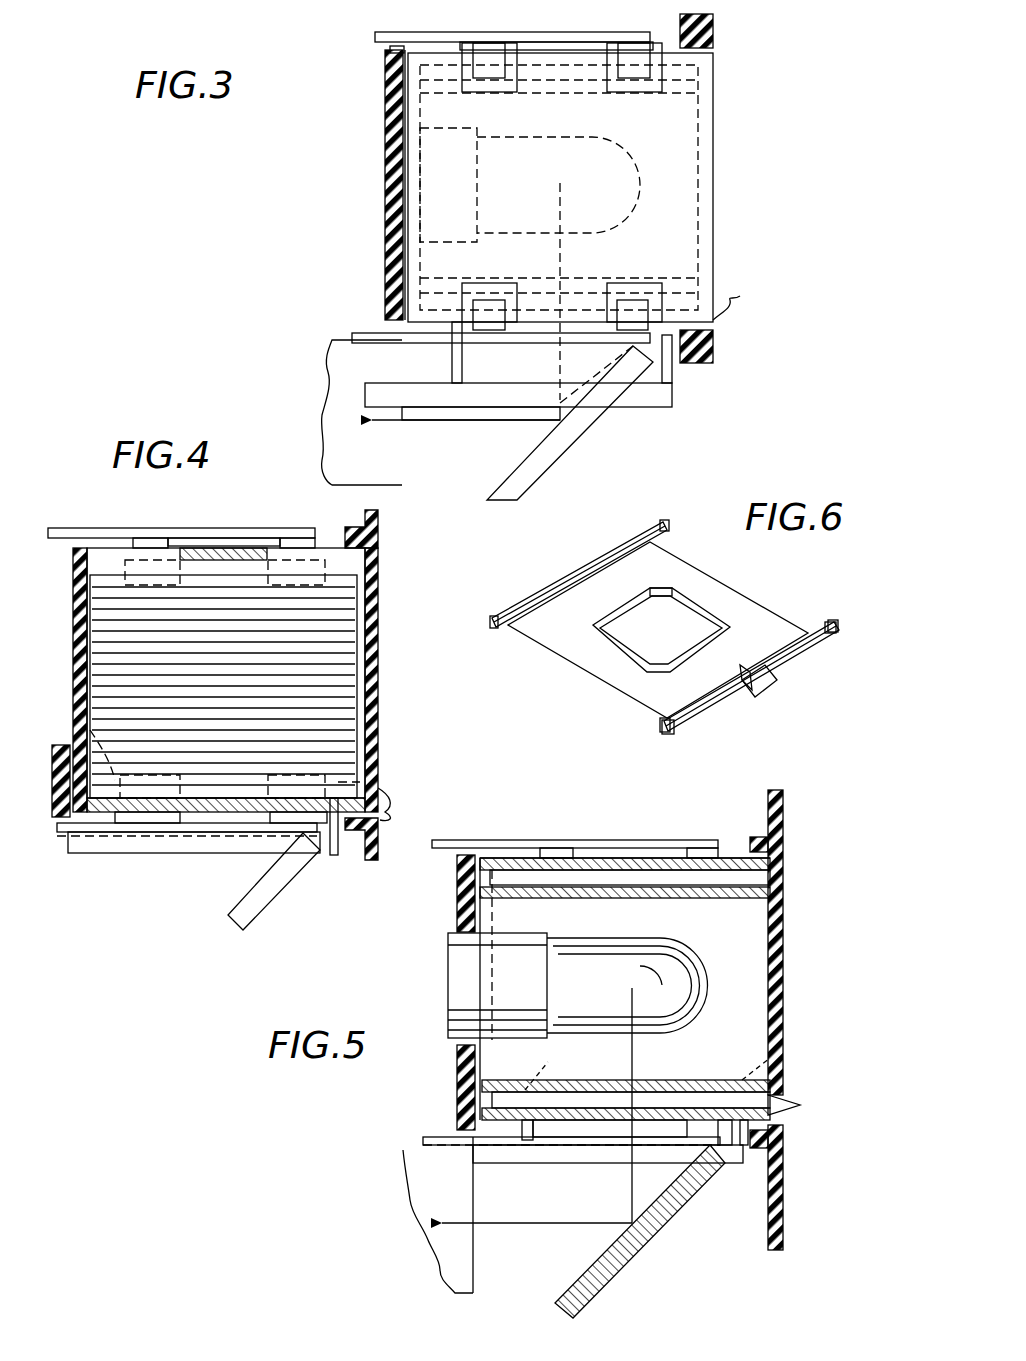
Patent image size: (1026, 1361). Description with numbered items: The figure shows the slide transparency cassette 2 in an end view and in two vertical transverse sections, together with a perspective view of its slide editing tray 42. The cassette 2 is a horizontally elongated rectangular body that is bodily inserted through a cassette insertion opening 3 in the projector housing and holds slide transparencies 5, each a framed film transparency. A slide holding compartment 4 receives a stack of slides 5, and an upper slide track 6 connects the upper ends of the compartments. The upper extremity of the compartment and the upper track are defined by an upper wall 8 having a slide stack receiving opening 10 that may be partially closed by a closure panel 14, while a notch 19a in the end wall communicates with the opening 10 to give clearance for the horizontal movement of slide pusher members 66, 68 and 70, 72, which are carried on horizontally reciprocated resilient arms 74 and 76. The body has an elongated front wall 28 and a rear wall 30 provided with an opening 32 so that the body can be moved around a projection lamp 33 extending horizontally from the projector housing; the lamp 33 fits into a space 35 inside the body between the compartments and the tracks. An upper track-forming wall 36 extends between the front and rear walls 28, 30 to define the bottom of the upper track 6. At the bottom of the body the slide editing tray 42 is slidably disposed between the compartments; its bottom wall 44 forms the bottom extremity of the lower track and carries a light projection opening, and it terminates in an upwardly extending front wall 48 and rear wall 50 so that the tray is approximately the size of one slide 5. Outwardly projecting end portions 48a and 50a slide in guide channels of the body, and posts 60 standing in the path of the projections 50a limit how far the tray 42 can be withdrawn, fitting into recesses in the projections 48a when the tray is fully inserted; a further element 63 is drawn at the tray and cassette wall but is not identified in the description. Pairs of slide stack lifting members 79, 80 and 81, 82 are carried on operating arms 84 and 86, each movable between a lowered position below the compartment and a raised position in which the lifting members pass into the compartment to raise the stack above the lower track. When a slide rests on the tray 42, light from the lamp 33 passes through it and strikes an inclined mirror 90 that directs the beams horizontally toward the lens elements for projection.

In FIG. 3, the slide transparency cassette 2 is at (392, 50).
In FIG. 4, the slide transparency cassette 2 is at (385, 585).
In FIG. 5, the slide transparency cassette 2 is at (785, 940).
In FIG. 5, the cassette insertion opening 3 is at (783, 860).
In FIG. 4, the slide holding compartment 4 is at (372, 623).
In FIG. 4, the slide transparencies 5 is at (95, 655).
In FIG. 5, the slide transparencies 5 is at (620, 880).
In FIG. 5, the upper open ended slide track 6 is at (605, 875).
In FIG. 5, the upper wall 8 is at (660, 858).
In FIG. 4, the slide stack receiving opening 10 is at (103, 535).
In FIG. 4, the closure panel 14 is at (225, 550).
In FIG. 3, the notch 19a is at (480, 44).
In FIG. 4, the front wall 28 is at (378, 706).
In FIG. 5, the front wall 28 is at (783, 993).
In FIG. 3, the rear wall 30 is at (395, 185).
In FIG. 4, the rear wall 30 is at (73, 620).
In FIG. 5, the rear wall 30 is at (470, 885).
In FIG. 5, the opening 32 is at (475, 1072).
In FIG. 3, the projection lamp 33 is at (632, 165).
In FIG. 5, the projection lamp 33 is at (698, 968).
In FIG. 5, the space 35 is at (495, 910).
In FIG. 5, the upper track-forming wall 36 is at (670, 898).
In FIG. 6, the slide editing tray 42 is at (600, 695).
In FIG. 6, the bottom wall of slide editing tray 44 is at (725, 595).
In FIG. 6, the front wall of slide editing tray 48 is at (815, 655).
In FIG. 6, the front wall end portion 48a is at (838, 627).
In FIG. 6, the rear wall of slide editing tray 50 is at (605, 568).
In FIG. 6, the rear wall end portion 50a is at (666, 526).
In FIG. 6, the post 60 is at (834, 633).
In FIG. 3, the latch 63 is at (728, 300).
In FIG. 4, the latch 63 is at (386, 814).
In FIG. 6, the latch 63 is at (765, 695).
In FIG. 5, the latch 63 is at (800, 1104).
In FIG. 3, the slide pusher member 66 is at (492, 78).
In FIG. 3, the slide pusher member 68 is at (630, 78).
In FIG. 4, the slide pusher member 70 is at (145, 540).
In FIG. 5, the slide pusher member 70 is at (558, 848).
In FIG. 4, the slide pusher member 72 is at (298, 542).
In FIG. 5, the slide pusher member 72 is at (700, 850).
In FIG. 3, the resilient arm 74 is at (545, 33).
In FIG. 5, the resilient arm 76 is at (513, 840).
In FIG. 3, the slide stack lifting member 79 is at (452, 364).
In FIG. 4, the slide stack lifting member 79 is at (75, 735).
In FIG. 3, the slide stack lifting member 80 is at (672, 365).
In FIG. 4, the slide stack lifting member 80 is at (380, 778).
In FIG. 5, the slide stack lifting member 81 is at (554, 1065).
In FIG. 5, the slide stack lifting member 82 is at (783, 1055).
In FIG. 3, the operating arm 84 is at (476, 408).
In FIG. 4, the operating arm 84 is at (82, 853).
In FIG. 5, the operating arm 84 is at (575, 1206).
In FIG. 4, the operating arm 86 is at (188, 538).
In FIG. 5, the operating arm 86 is at (520, 1160).
In FIG. 3, the inclined mirror 90 is at (568, 452).
In FIG. 4, the inclined mirror 90 is at (270, 910).
In FIG. 5, the inclined mirror 90 is at (645, 1250).